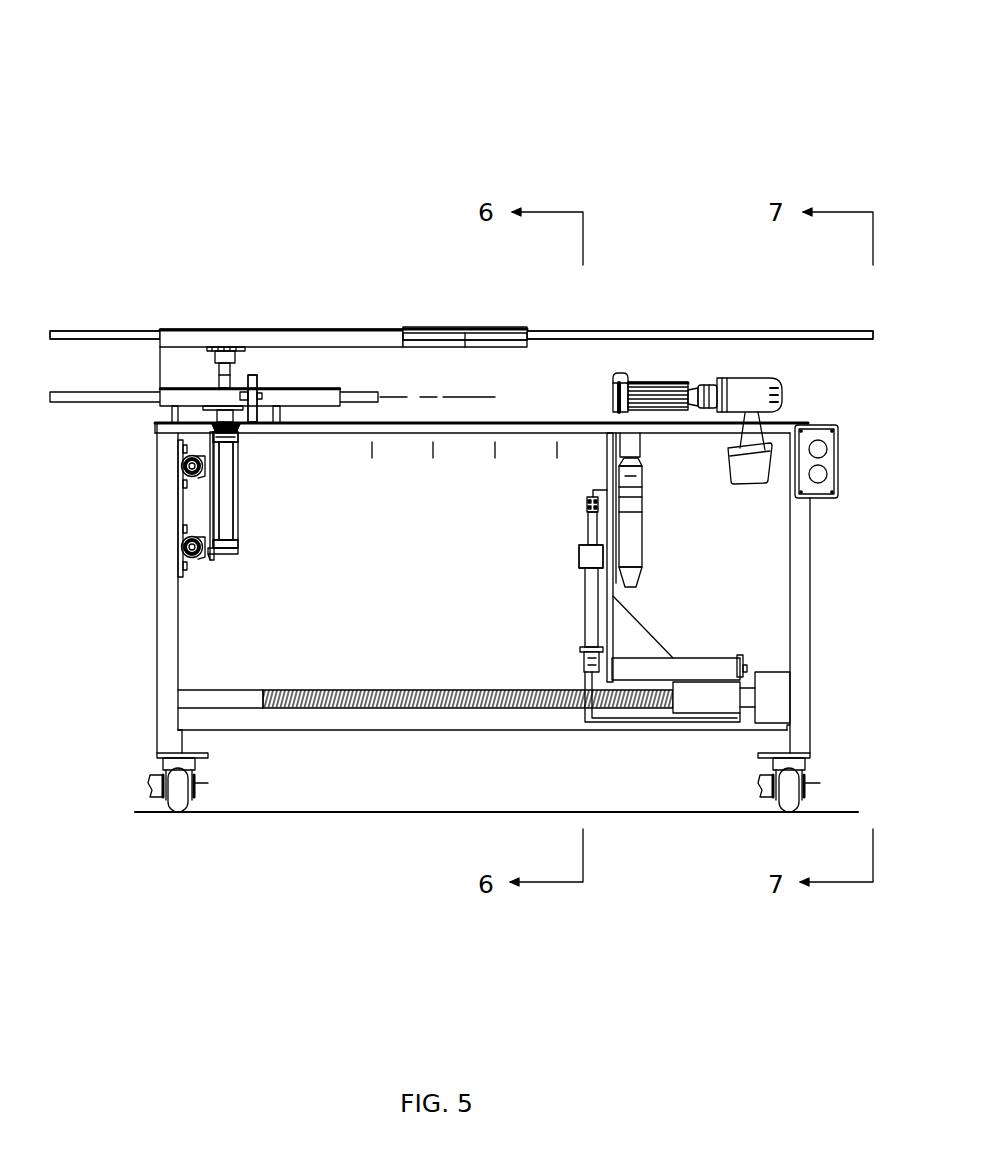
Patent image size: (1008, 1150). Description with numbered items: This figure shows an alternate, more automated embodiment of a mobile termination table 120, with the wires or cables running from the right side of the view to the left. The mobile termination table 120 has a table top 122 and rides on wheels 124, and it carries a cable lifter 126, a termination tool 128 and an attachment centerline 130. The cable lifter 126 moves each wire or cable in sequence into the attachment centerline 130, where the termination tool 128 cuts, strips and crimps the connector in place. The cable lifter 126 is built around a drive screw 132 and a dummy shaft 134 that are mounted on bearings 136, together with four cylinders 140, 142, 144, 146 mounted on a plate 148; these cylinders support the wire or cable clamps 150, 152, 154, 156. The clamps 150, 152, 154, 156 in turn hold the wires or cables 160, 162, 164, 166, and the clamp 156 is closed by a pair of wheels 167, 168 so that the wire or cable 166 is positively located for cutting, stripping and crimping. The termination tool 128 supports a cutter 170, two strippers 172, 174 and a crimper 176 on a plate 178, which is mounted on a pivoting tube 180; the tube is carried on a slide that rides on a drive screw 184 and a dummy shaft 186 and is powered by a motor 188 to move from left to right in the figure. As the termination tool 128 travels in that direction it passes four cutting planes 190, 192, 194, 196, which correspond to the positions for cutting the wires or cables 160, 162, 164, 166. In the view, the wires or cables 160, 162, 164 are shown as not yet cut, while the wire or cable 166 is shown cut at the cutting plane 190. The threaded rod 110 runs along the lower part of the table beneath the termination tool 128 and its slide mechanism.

The threaded rod 110 is at (282, 688).
The mobile termination table 120 is at (566, 183).
The table top 122 is at (780, 420).
The wheels 124 is at (208, 793).
The cable lifter 126 is at (240, 257).
The termination tool 128 is at (652, 538).
The attachment centerline 130 is at (427, 393).
The drive screw 132 is at (178, 470).
The dummy shaft 134 is at (178, 547).
The bearings 136 is at (182, 466).
The cylinder 140 is at (225, 528).
The cylinder 142 is at (225, 437).
The cylinder 144 is at (226, 491).
The cylinder 146 is at (225, 544).
The plate 148 is at (210, 560).
The wire or cable clamp 150 is at (503, 328).
The wire or cable clamp 152 is at (447, 327).
The wire or cable clamp 154 is at (340, 331).
The wire or cable clamp 156 is at (282, 386).
The wire or cable 160 is at (73, 334).
The wire or cable 162 is at (105, 335).
The wire or cable 164 is at (700, 335).
The wire or cable 166 is at (115, 392).
The wheel 167 is at (255, 378).
The wheel 168 is at (252, 398).
The cutter 170 is at (638, 443).
The stripper 172 is at (728, 380).
The stripper 174 is at (750, 387).
The crimper 176 is at (620, 373).
The plate 178 is at (622, 608).
The pivoting tube 180 is at (700, 655).
The drive screw 184 is at (413, 686).
The dummy shaft 186 is at (591, 556).
The motor 188 is at (763, 715).
The cutting plane 190 is at (368, 465).
The cutting plane 192 is at (430, 465).
The cutting plane 194 is at (492, 465).
The cutting plane 196 is at (555, 465).